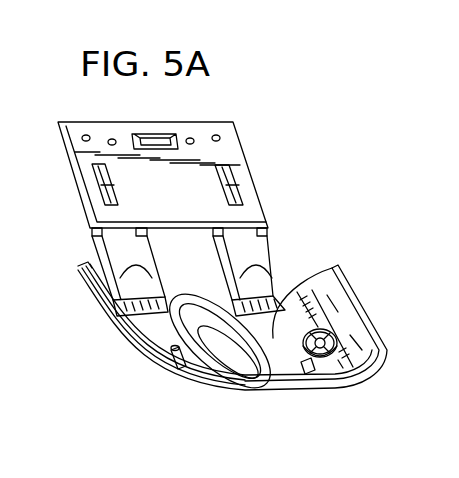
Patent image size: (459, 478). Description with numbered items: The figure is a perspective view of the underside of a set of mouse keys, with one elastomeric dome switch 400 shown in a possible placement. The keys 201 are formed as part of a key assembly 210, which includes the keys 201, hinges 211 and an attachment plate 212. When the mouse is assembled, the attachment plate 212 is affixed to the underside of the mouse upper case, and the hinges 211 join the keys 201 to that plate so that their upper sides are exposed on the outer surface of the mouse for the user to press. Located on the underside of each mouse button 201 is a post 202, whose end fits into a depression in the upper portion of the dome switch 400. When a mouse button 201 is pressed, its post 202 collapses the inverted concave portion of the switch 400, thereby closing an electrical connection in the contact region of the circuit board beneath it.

The key assembly 210 is at (339, 103).
The attachment plate 212 is at (235, 148).
The hinges 211 is at (92, 245).
The mouse button 201 is at (276, 318).
The post 202 is at (170, 356).
The elastomeric dome switch 400 is at (333, 335).